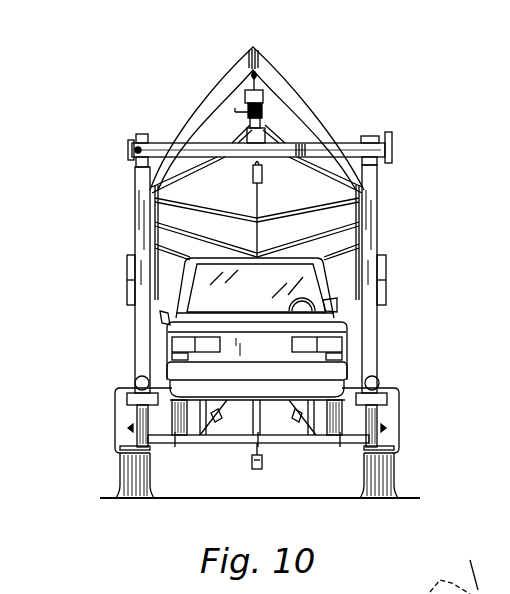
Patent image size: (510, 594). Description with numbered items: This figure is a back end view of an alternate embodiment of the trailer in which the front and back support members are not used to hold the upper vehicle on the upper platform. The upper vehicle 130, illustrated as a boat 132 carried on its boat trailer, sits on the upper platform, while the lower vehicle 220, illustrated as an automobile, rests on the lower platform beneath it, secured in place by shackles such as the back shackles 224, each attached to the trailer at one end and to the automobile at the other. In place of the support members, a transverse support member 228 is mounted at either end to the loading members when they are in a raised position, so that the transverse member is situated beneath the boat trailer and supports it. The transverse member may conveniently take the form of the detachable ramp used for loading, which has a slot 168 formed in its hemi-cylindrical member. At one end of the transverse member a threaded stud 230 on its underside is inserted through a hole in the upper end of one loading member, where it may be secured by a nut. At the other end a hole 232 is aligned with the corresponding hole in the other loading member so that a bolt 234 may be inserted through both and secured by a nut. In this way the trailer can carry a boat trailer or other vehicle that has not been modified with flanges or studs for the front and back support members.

The vehicle 130 is at (285, 50).
The boat 132 is at (262, 121).
The transverse support member 228 is at (348, 143).
The threaded stud 230 is at (388, 148).
The hole 232 is at (148, 138).
The bolt 234 is at (135, 150).
The lower vehicle 220 is at (350, 333).
The back shackles 224 is at (224, 428).
The slot 168 is at (458, 565).